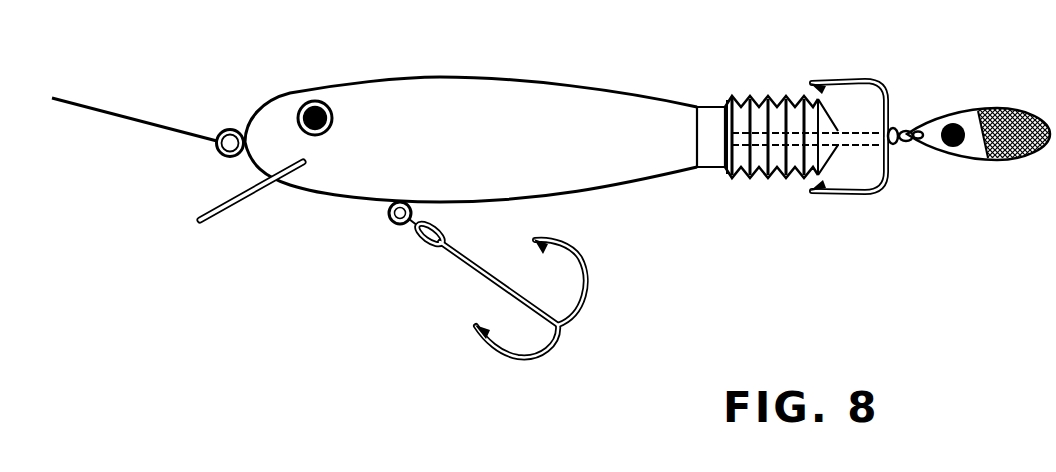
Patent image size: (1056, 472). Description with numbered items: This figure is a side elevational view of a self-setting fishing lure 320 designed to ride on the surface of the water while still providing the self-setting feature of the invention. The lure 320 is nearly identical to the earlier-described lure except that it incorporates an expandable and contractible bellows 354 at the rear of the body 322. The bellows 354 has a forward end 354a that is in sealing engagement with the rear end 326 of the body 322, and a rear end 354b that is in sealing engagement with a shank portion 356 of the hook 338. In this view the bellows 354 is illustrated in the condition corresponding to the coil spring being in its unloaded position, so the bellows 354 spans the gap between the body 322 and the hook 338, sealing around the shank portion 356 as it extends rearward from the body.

The self-setting fishing lure 320 is at (554, 187).
The body 322 is at (545, 93).
The rear end of the body 326 is at (707, 172).
The bellows 354 is at (821, 143).
The forward end of the bellows 354a is at (732, 178).
The rear end of the bellows 354b is at (833, 130).
The shank portion of the hook 356 is at (847, 140).
The hook 338 is at (887, 97).